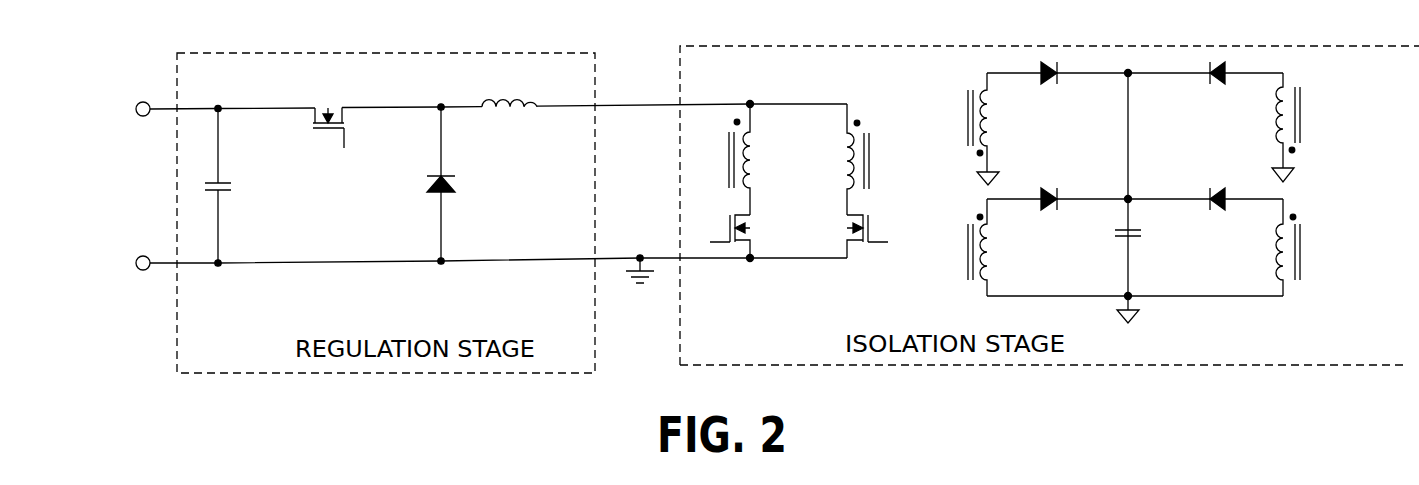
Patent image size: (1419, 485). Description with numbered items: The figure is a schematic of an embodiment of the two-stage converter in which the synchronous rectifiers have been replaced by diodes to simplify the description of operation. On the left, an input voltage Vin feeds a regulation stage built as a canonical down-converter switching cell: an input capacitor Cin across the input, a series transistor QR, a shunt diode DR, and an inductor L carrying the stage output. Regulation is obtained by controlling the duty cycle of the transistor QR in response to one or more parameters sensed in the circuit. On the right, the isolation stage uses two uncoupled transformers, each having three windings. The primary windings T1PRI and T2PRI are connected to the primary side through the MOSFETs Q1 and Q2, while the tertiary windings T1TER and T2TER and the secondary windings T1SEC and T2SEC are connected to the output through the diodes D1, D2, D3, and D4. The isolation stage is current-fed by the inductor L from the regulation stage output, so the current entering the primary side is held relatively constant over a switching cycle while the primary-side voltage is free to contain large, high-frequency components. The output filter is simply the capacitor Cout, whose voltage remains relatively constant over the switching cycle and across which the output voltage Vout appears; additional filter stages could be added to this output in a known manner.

The input voltage Vin is at (123, 186).
The capacitor Cin is at (241, 186).
The transistor QR is at (323, 135).
The inductor L is at (509, 89).
The diode DR is at (462, 184).
The primary winding T1PRI is at (703, 159).
The primary winding T2PRI is at (889, 159).
The MOSFET Q1 is at (748, 236).
The MOSFET Q2 is at (879, 236).
The tertiary winding T1TER is at (946, 129).
The tertiary winding T2TER is at (1321, 127).
The secondary winding T1SEC is at (941, 247).
The secondary winding T2SEC is at (1324, 247).
The diode D1 is at (1060, 181).
The diode D2 is at (1228, 181).
The diode D3 is at (1052, 92).
The diode D4 is at (1220, 92).
The capacitor Cout is at (1097, 248).
The output voltage Vout is at (1182, 245).